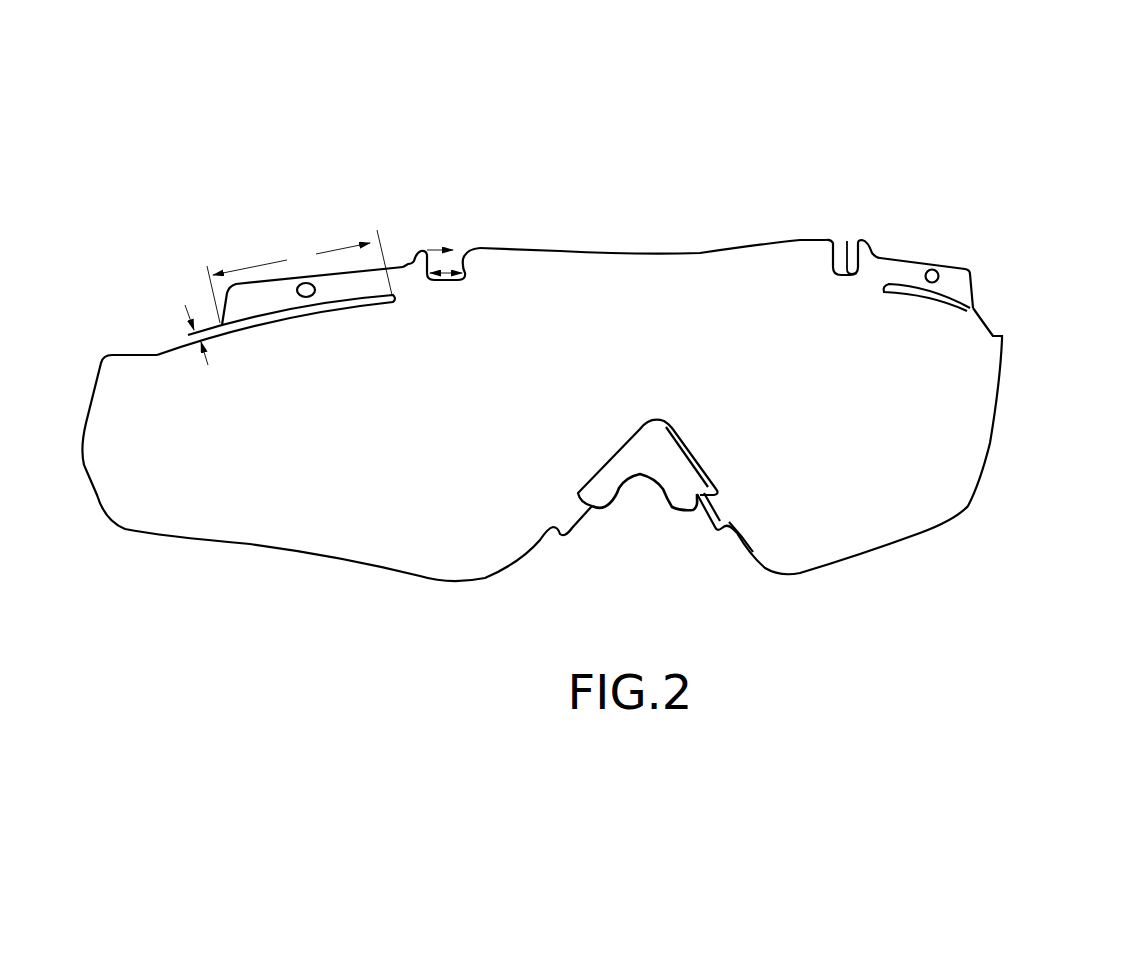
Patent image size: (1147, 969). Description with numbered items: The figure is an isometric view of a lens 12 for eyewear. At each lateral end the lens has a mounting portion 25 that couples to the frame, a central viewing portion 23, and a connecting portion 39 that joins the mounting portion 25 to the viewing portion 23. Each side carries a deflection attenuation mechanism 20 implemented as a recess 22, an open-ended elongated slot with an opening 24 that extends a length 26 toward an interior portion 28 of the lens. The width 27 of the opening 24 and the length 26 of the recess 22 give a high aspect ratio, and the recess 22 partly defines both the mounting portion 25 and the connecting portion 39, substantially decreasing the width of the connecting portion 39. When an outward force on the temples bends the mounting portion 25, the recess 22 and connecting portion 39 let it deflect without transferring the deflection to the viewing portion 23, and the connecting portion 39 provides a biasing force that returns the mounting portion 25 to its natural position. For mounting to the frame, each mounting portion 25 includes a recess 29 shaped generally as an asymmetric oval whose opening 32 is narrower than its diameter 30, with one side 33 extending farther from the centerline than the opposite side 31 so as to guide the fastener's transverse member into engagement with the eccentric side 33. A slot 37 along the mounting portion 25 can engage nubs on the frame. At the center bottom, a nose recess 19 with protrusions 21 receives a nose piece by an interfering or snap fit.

The lens 12 is at (228, 613).
The nose recess 19 is at (636, 518).
The deflection attenuation mechanism 20 is at (196, 197).
The protrusions 21 is at (644, 477).
The recess 22 is at (308, 320).
The viewing portion 23 is at (401, 478).
The opening 24 is at (219, 318).
The mounting portion 25 is at (384, 178).
The length 26 is at (299, 276).
The width 27 is at (190, 331).
The interior portion 28 is at (630, 317).
The recess 29 is at (442, 192).
The diameter 30 is at (445, 272).
The opposite side 31 is at (472, 264).
The opening 32 is at (441, 237).
The side 33 is at (414, 262).
The slot 37 is at (303, 283).
The connecting portion 39 is at (409, 294).